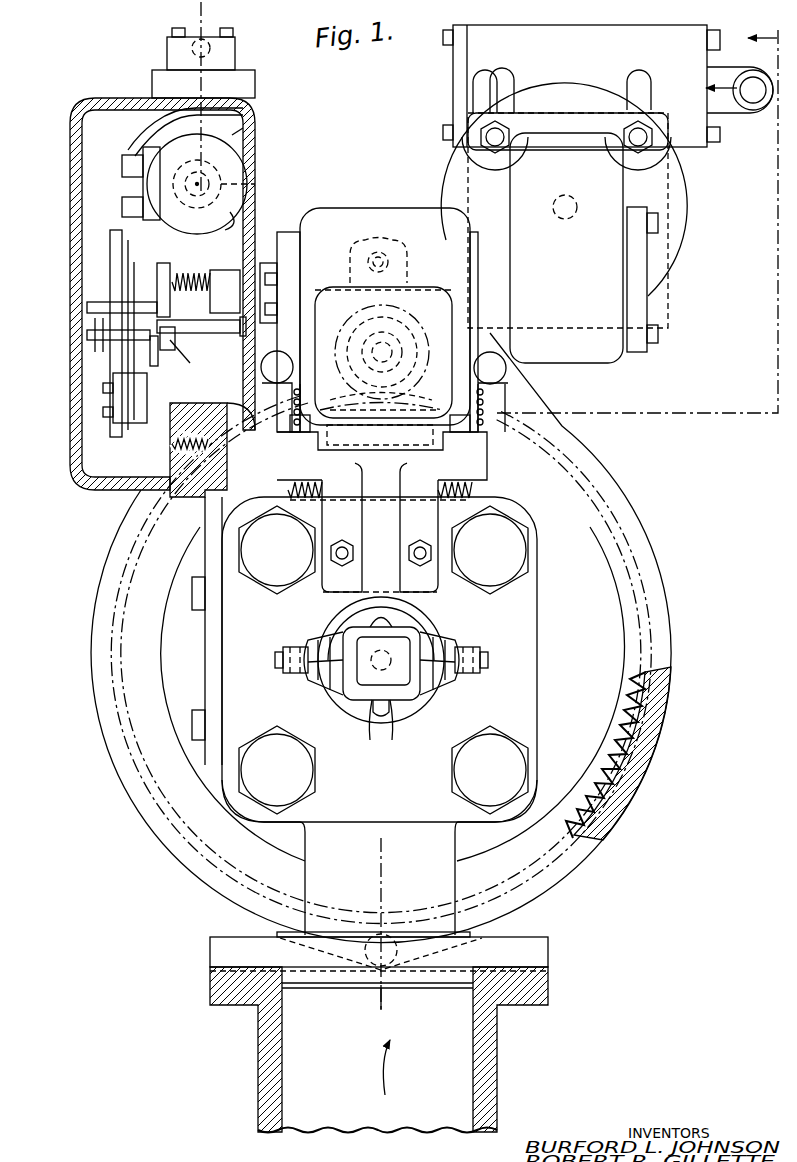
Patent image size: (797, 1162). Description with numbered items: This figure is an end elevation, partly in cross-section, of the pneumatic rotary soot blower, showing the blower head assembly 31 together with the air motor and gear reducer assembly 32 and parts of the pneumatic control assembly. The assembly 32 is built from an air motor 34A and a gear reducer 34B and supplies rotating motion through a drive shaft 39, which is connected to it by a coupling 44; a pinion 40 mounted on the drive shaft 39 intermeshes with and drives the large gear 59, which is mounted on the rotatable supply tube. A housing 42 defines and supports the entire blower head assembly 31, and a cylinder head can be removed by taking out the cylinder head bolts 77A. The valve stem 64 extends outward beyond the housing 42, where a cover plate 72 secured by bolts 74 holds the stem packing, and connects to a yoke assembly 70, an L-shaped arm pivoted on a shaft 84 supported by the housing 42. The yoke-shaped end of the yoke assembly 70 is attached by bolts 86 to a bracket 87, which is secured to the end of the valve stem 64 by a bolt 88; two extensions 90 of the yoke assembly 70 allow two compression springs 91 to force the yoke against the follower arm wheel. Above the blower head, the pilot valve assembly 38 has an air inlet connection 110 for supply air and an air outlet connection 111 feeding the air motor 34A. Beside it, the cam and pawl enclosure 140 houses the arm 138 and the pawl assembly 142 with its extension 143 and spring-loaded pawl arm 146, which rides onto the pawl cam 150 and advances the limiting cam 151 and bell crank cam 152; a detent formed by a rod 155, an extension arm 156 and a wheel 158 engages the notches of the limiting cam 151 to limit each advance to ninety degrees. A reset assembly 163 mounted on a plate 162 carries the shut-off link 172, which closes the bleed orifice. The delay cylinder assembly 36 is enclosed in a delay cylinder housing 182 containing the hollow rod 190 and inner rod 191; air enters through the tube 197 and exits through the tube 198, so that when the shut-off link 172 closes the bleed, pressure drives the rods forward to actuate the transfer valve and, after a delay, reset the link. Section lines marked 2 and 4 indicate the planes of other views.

The section line 2- 2 is at (384, 998).
The section line 4- 4 is at (198, 14).
The blower head assembly 31 is at (303, 880).
The air motor and gear reducer assembly 32 is at (697, 248).
The air motor 34A is at (672, 190).
The gear reducer 34B is at (345, 210).
The delay cylinder assembly 36 is at (225, 145).
The pilot valve assembly 38 is at (712, 27).
The drive shaft 39 is at (352, 340).
The pinion 40 is at (400, 335).
The housing 42 is at (640, 530).
The coupling 44 is at (691, 220).
The large gear 59 is at (640, 712).
The valve stem 64 is at (381, 662).
The yoke assembly 70 is at (474, 612).
The cover plate 72 is at (405, 705).
The bolts 74 is at (375, 617).
The cylinder head bolts 77A is at (383, 660).
The shaft 84 is at (425, 425).
The bolts 86 is at (283, 672).
The bracket 87 is at (378, 722).
The bolt 88 is at (420, 675).
The extensions 90 is at (343, 683).
The compression springs 91 is at (292, 398).
The air inlet connection 110 is at (755, 93).
The air outlet connection 111 is at (638, 78).
The arm 138 is at (270, 300).
The cam and pawl enclosure 140 is at (256, 122).
The pawl assembly 142 is at (164, 264).
The extension 143 is at (200, 327).
The pawl arm 146 is at (205, 300).
The pawl cam 150 is at (178, 340).
The limiting cam 151 is at (160, 360).
The bell crank cam 152 is at (92, 334).
The rod 155 is at (200, 273).
The extension arm 156 is at (128, 272).
The wheel 158 is at (186, 358).
The plate 162 is at (110, 240).
The reset assembly 163 is at (98, 380).
The shut-off link 172 is at (140, 387).
The delay cylinder housing 182 is at (243, 133).
The hollow rod 190 is at (273, 185).
The inner rod 191 is at (180, 200).
The tube 197 is at (148, 128).
The tube 198 is at (115, 295).